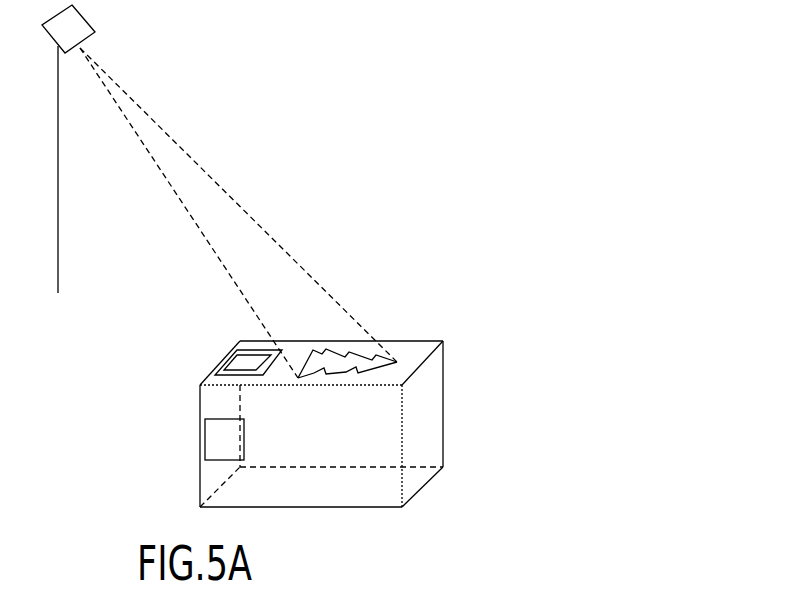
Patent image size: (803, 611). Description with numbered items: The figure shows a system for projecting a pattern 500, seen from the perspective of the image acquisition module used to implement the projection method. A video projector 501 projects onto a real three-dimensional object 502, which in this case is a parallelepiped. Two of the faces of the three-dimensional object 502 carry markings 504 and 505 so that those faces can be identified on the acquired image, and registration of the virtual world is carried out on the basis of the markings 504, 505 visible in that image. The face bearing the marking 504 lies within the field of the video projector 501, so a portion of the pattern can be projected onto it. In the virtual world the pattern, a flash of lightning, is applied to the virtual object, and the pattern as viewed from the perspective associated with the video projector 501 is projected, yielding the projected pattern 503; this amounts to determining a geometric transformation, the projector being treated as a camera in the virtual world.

The system for projecting a pattern 500 is at (357, 130).
The video projector 501 is at (96, 29).
The three-dimensional object 502 is at (419, 340).
The projected pattern 503 is at (320, 350).
The marking 504 is at (233, 354).
The marking 505 is at (205, 440).